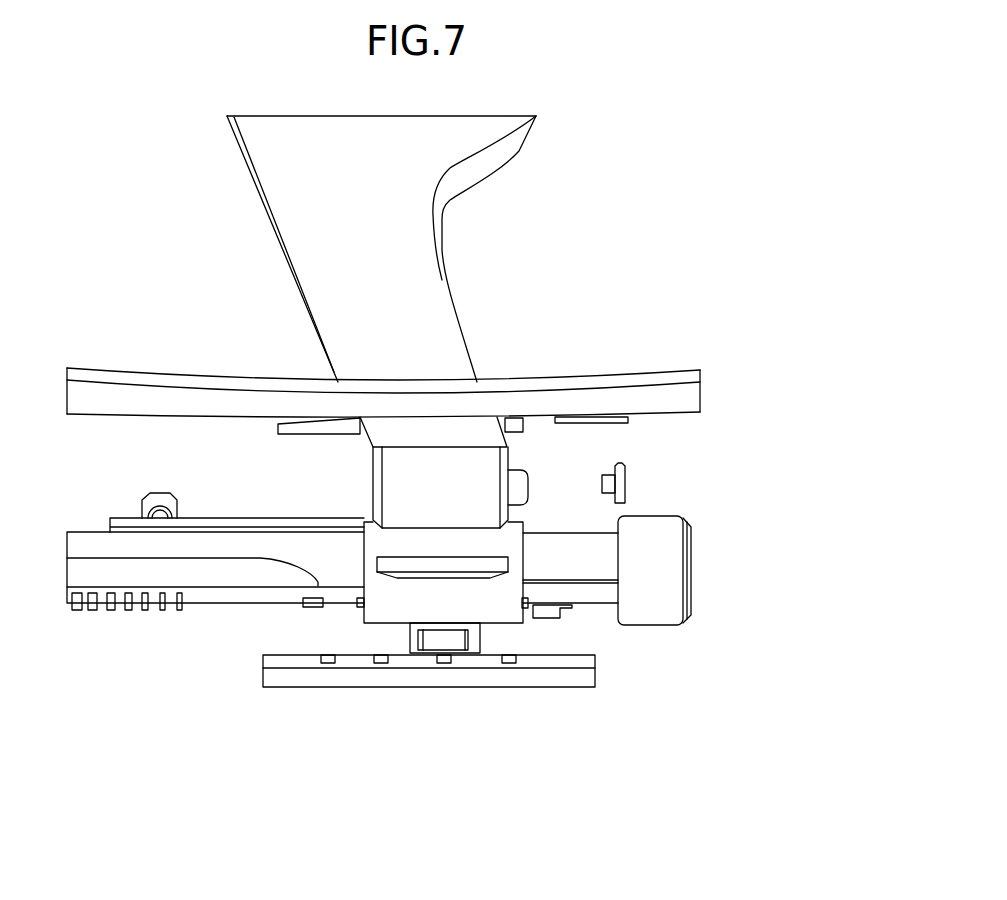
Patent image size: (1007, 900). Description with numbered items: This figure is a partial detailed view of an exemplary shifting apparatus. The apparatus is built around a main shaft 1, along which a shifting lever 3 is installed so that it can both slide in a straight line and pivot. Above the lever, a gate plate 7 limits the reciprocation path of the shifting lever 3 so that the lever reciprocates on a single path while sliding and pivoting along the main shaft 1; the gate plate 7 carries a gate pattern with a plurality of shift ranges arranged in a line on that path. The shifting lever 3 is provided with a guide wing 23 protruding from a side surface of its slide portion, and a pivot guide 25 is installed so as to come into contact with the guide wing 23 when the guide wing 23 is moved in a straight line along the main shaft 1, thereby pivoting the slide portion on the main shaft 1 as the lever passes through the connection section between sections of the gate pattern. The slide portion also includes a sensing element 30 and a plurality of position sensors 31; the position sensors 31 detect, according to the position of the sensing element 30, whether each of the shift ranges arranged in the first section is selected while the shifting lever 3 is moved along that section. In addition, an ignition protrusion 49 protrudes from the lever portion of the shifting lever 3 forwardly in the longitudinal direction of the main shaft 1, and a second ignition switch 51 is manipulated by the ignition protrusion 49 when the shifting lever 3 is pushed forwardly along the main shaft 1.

The main shaft 1 is at (582, 538).
The shifting lever 3 is at (432, 158).
The gate plate 7 is at (522, 380).
The guide wing 23 is at (443, 565).
The pivot guide 25 is at (205, 573).
The sensing element 30 is at (432, 643).
The position sensors 31 is at (380, 662).
The ignition protrusion 49 is at (525, 490).
The second ignition switch 51 is at (627, 482).